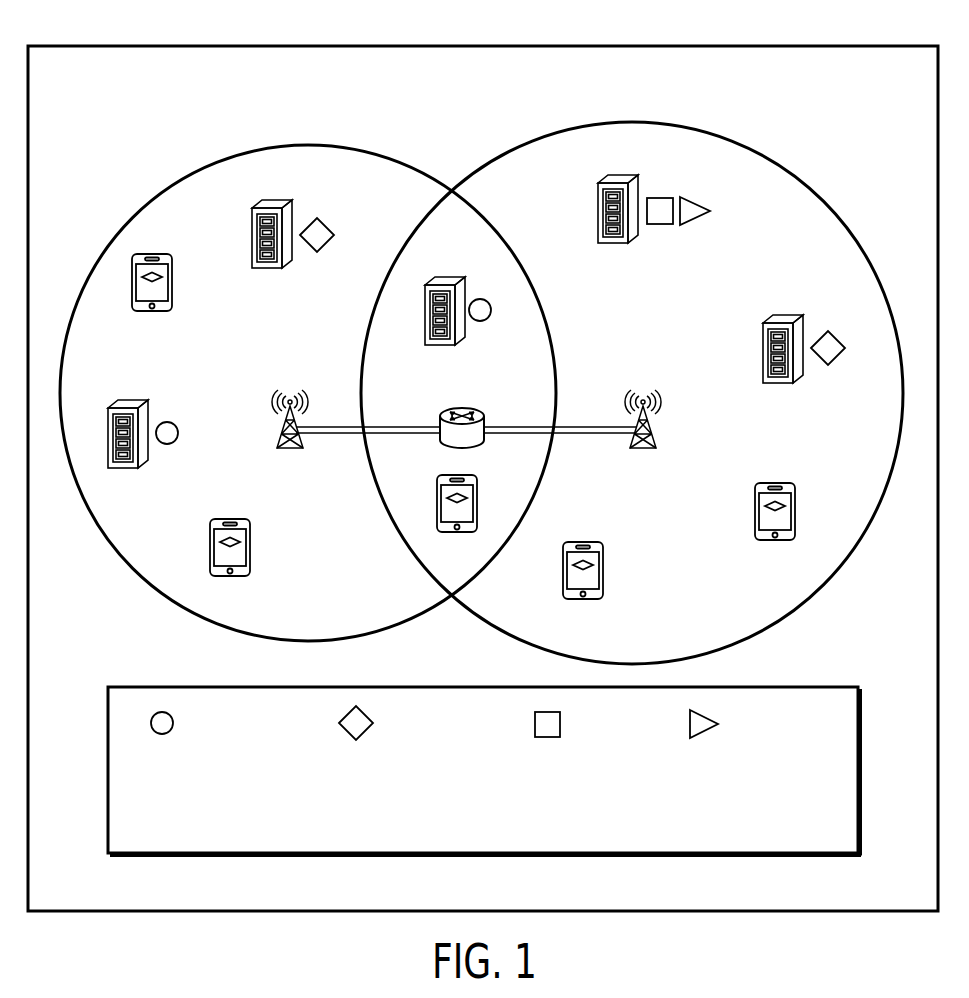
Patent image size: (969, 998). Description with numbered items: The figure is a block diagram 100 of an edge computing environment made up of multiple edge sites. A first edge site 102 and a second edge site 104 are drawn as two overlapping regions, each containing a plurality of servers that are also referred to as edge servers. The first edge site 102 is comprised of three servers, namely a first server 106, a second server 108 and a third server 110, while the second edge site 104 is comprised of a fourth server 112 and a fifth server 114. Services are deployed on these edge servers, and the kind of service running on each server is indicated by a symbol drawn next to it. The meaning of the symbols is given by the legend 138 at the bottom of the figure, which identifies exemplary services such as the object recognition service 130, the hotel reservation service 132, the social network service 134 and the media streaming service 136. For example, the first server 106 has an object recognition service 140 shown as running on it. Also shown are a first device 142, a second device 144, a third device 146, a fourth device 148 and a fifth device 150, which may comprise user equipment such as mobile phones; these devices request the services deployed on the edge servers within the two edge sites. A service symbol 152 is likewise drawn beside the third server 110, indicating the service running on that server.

The block diagram 100 is at (64, 47).
The first edge site E1 102 is at (293, 350).
The second edge site E2 104 is at (640, 352).
The server S1 106 is at (150, 487).
The server S2 108 is at (293, 287).
The server S3 110 is at (465, 366).
The server S4 112 is at (640, 263).
The server S5 114 is at (806, 400).
The object recognition service 130 is at (265, 766).
The hotel reservation service 132 is at (445, 766).
The social network service 134 is at (610, 767).
The media streaming service 136 is at (780, 767).
The legend 138 is at (140, 809).
The object recognition service 140 is at (178, 432).
The device U1 142 is at (175, 331).
The device U2 144 is at (438, 551).
The device U3 146 is at (252, 596).
The device U4 148 is at (752, 561).
The device U5 150 is at (605, 621).
The object recognition service instance on S3 152 is at (492, 310).